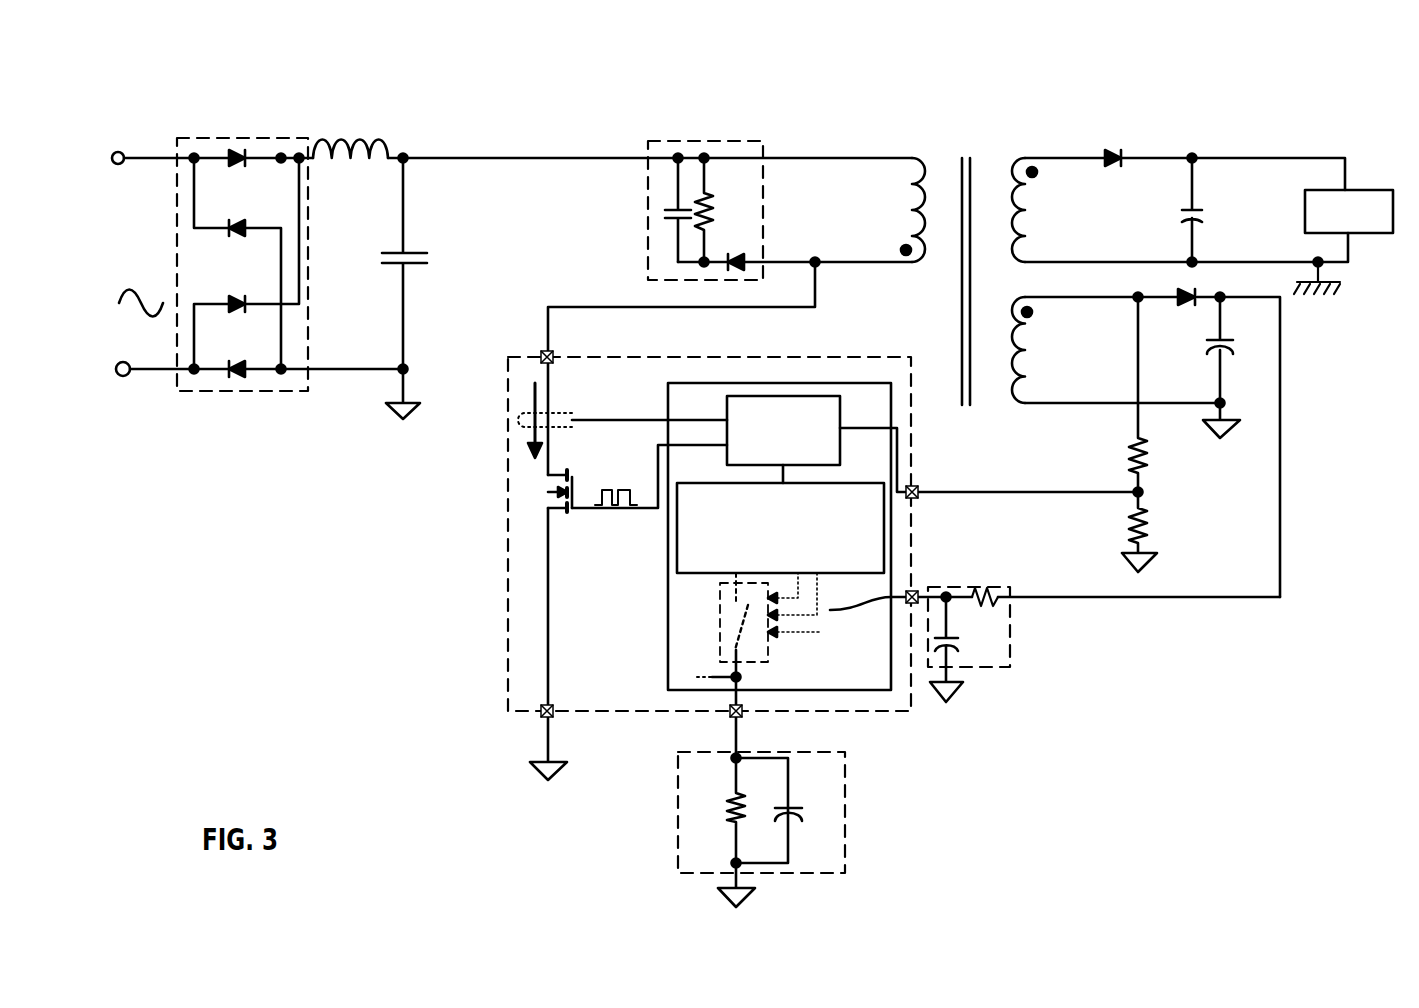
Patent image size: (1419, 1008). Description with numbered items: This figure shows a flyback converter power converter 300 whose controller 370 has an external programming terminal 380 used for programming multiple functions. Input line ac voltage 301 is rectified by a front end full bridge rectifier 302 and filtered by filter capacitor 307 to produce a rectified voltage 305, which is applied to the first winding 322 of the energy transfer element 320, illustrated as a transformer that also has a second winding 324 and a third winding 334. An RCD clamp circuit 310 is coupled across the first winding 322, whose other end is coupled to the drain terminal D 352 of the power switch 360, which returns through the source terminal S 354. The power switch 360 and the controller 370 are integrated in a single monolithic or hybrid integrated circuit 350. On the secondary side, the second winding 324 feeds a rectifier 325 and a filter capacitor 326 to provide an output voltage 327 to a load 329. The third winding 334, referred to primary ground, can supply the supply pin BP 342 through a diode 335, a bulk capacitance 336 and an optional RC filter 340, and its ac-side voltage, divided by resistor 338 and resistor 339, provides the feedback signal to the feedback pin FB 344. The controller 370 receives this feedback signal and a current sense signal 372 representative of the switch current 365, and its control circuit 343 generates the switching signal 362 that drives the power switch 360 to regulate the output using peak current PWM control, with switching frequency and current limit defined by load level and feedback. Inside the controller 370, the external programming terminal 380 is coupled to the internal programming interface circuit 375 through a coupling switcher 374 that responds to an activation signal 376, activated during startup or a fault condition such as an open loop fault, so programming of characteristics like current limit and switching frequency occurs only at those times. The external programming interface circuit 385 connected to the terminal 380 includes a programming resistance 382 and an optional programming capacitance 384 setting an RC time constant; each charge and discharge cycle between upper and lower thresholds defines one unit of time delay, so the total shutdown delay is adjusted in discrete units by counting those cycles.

The flyback converter power converter 300 is at (1313, 64).
The input line ac voltage 301 is at (130, 252).
The front end full bridge rectifier 302 is at (208, 127).
The rectified voltage 305 is at (343, 122).
The filter capacitor 307 is at (437, 263).
The clamp circuit 310 is at (720, 127).
The energy transfer element 320 is at (967, 145).
The first winding 322 is at (903, 215).
The second winding 324 is at (1032, 190).
The rectifier 325 is at (1113, 142).
The filter capacitor 326 is at (1173, 215).
The output voltage 327 is at (1235, 193).
The load 329 is at (1358, 182).
The third winding 334 is at (1027, 365).
The diode 335 is at (1195, 312).
The bulk capacitance 336 is at (1235, 352).
The resistor R1 338 is at (1095, 463).
The resistor R2 339 is at (1187, 527).
The optional RC filter 340 is at (1002, 670).
The supply pin BP 342 is at (920, 583).
The control circuit 343 is at (772, 395).
The feedback pin 344 is at (923, 478).
The integrated circuit 350 is at (865, 355).
The drain terminal D 352 is at (558, 347).
The source terminal S 354 is at (538, 733).
The power switch 360 is at (538, 483).
The switching signal 362 is at (567, 520).
The switch current 365 is at (527, 423).
The controller 370 is at (868, 692).
The current sense signal 372 is at (620, 393).
The coupling switcher 374 is at (715, 613).
The internal programming interface circuit 375 is at (677, 557).
The activation signal 376 is at (892, 573).
The external programming terminal 380 is at (720, 717).
The resistance RPD 382 is at (718, 807).
The programming capacitor CPD 384 is at (795, 803).
The external programming interface circuit 385 is at (845, 868).